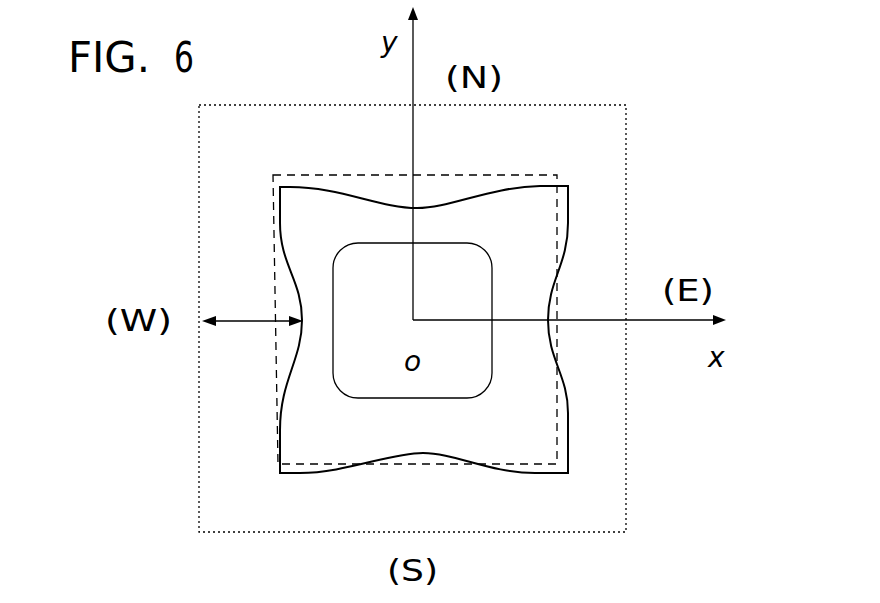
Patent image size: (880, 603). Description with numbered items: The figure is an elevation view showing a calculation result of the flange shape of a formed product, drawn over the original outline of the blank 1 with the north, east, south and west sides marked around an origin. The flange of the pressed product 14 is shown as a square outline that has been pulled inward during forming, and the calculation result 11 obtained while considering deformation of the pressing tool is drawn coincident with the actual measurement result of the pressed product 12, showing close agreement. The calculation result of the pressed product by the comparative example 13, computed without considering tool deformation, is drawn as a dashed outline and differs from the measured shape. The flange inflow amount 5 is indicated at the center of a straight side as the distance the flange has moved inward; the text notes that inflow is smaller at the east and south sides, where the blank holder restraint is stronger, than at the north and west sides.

The blank 1 is at (626, 140).
The flange inflow amount 5 is at (248, 322).
The calculation result 11 is at (520, 332).
The actual measurement result of pressed product 12 is at (520, 332).
The calculation result of pressed product by comparative example 13 is at (568, 411).
The flange of pressed product 14 is at (242, 375).